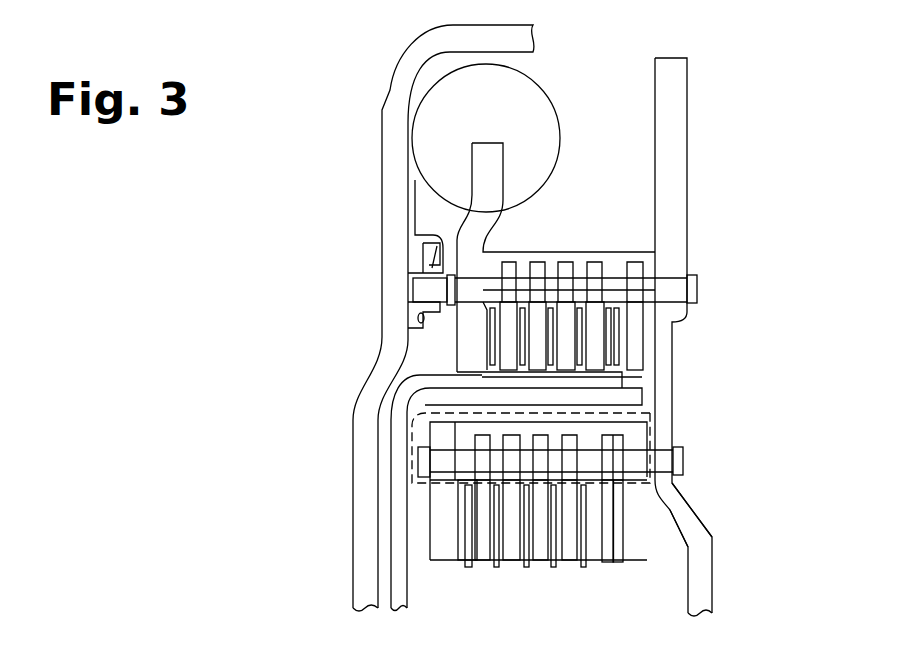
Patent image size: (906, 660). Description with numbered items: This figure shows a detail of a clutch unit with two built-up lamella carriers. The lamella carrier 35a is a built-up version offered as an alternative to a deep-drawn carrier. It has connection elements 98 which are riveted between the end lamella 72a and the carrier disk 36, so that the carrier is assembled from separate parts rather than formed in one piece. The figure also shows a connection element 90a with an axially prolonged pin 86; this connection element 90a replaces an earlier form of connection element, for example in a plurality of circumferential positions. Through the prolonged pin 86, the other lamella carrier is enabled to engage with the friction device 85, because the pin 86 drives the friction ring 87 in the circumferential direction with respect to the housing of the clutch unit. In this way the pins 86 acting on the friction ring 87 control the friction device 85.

The lamella carrier 35a is at (668, 512).
The carrier disk 36 is at (663, 190).
The end lamella 72a is at (453, 541).
The friction device 85 is at (382, 315).
The axially prolonged pin 86 is at (425, 292).
The friction ring 87 is at (415, 265).
The connection element 90a is at (594, 222).
The connection elements 98 is at (663, 412).